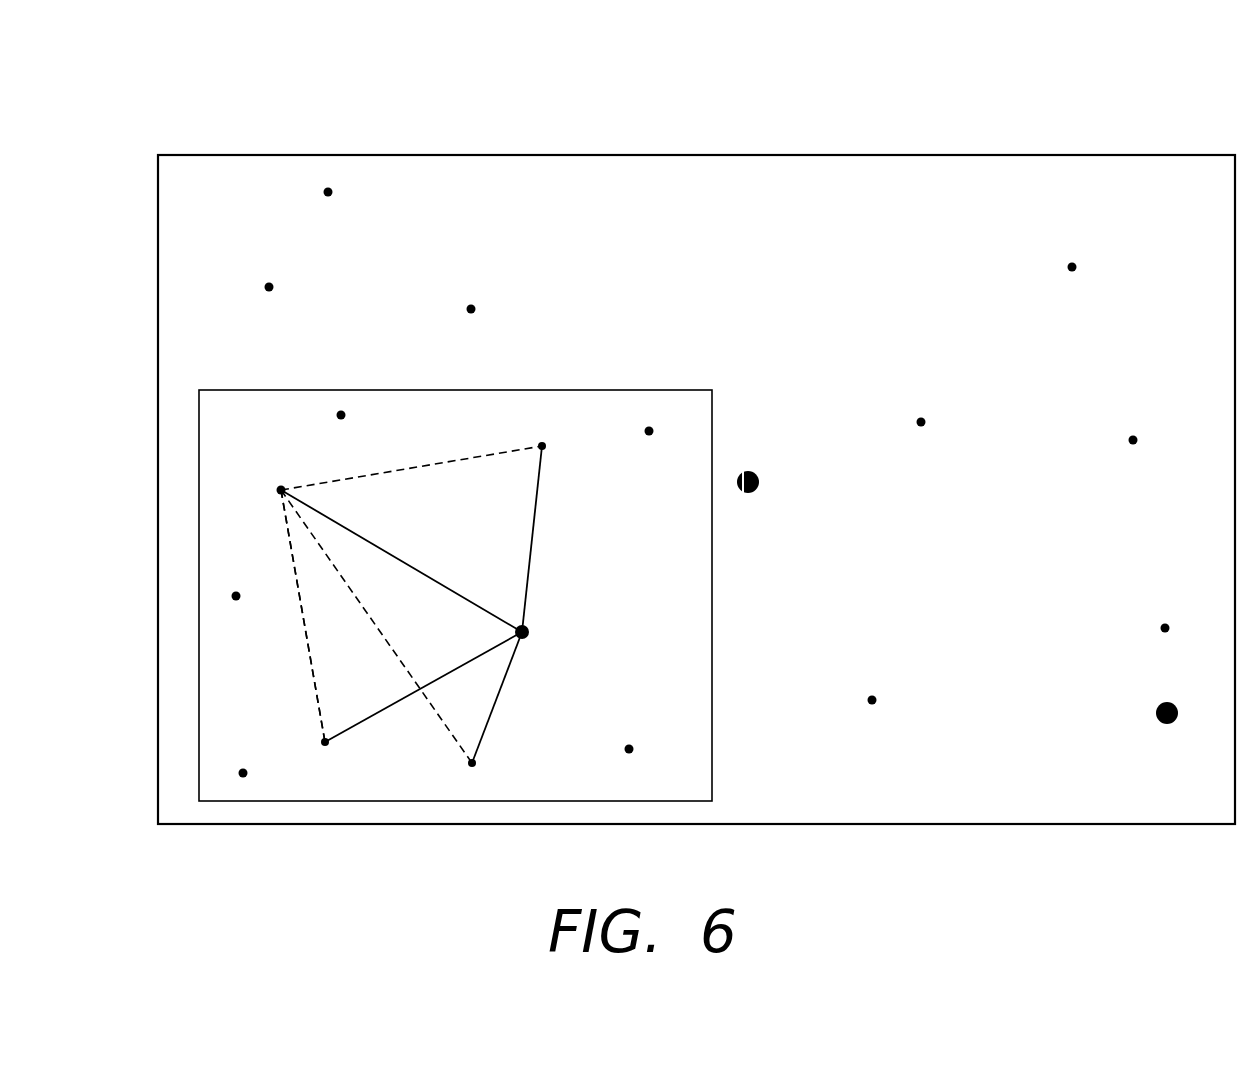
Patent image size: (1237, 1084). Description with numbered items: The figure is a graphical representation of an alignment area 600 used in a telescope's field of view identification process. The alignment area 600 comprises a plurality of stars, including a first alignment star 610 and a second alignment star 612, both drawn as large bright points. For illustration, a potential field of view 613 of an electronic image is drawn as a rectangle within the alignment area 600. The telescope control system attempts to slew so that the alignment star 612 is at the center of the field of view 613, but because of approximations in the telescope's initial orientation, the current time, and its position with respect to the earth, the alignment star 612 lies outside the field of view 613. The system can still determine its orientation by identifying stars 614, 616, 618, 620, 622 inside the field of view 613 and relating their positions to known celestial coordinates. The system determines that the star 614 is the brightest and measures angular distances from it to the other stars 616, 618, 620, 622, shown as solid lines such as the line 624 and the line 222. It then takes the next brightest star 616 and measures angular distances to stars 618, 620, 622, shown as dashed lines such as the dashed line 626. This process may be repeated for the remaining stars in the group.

The alignment area 600 is at (1095, 153).
The first alignment star 610 is at (1168, 700).
The second alignment star 612 is at (751, 470).
The field of view 613 is at (604, 390).
The star 614 is at (531, 628).
The star 616 is at (281, 488).
The star 618 is at (327, 744).
The star 620 is at (475, 763).
The star 622 is at (541, 444).
The star pair distance 624 is at (383, 549).
The star pair distance 222 is at (474, 657).
The dashed distance line 626 is at (306, 632).